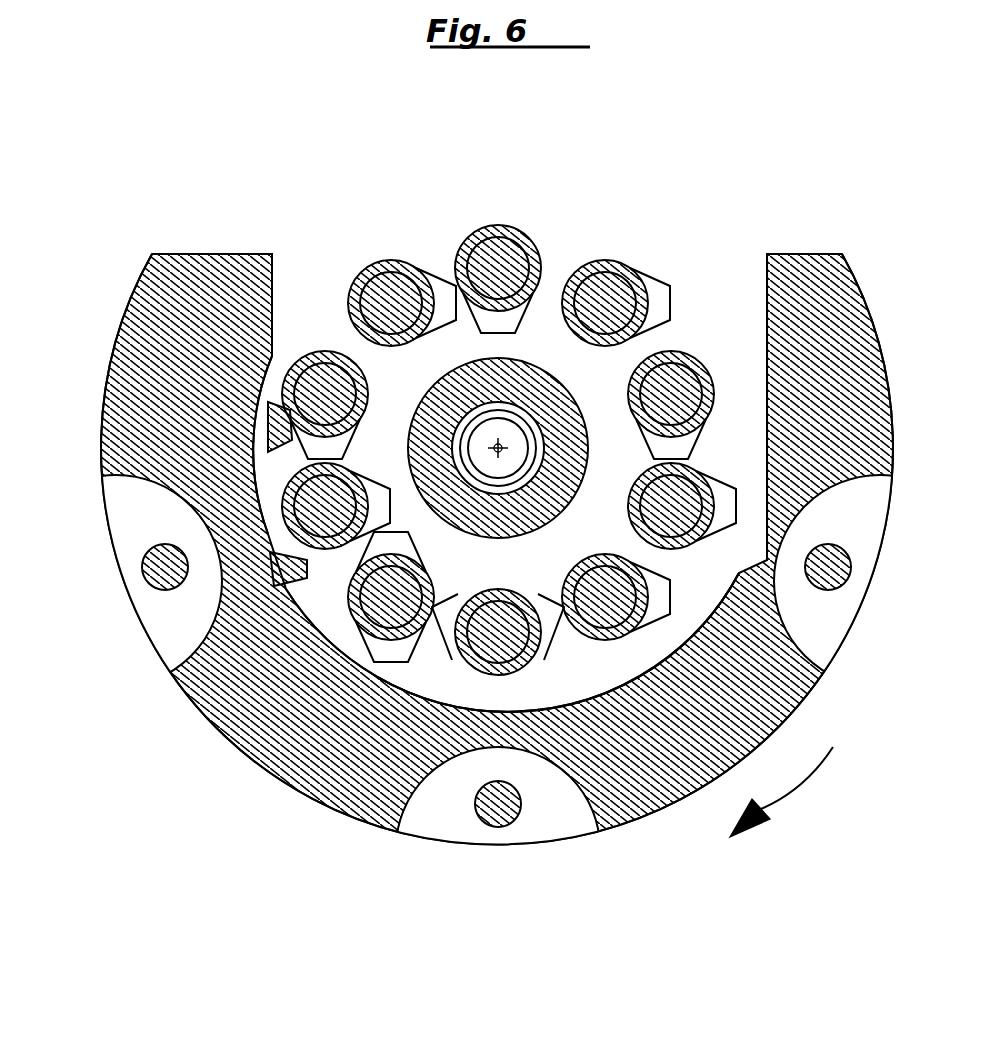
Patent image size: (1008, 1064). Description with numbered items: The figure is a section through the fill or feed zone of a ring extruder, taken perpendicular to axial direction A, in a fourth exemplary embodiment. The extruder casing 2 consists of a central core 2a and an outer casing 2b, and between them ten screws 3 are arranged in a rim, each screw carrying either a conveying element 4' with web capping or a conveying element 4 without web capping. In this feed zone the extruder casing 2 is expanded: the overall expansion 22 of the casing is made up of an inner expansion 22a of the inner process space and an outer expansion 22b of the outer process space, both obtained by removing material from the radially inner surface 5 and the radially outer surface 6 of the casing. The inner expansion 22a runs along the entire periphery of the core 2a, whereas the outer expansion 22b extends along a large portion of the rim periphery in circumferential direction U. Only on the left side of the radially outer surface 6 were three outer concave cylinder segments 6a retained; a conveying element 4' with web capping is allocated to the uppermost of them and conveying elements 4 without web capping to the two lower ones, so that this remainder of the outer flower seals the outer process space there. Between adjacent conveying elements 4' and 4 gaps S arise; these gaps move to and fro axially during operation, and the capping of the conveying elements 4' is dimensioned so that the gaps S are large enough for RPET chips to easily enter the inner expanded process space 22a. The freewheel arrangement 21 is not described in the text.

The extruder casing 2 is at (204, 250).
The core 2a is at (568, 458).
The outer casing 2b is at (168, 290).
The screws 3 is at (692, 360).
The conveying element without web capping 4 is at (429, 533).
The conveying element with web capping 4' is at (523, 385).
The radially inner surface 5 is at (410, 415).
The radially outer surface 6 is at (445, 693).
The outer concave cylinder segments 6a is at (277, 408).
The freewheel unit 21 is at (523, 383).
The overall expansion 22 is at (579, 675).
The inner expansion 22a is at (383, 384).
The outer expansion 22b is at (493, 683).
The axial direction A is at (500, 446).
The gaps S is at (554, 262).
The circumferential direction U is at (781, 792).